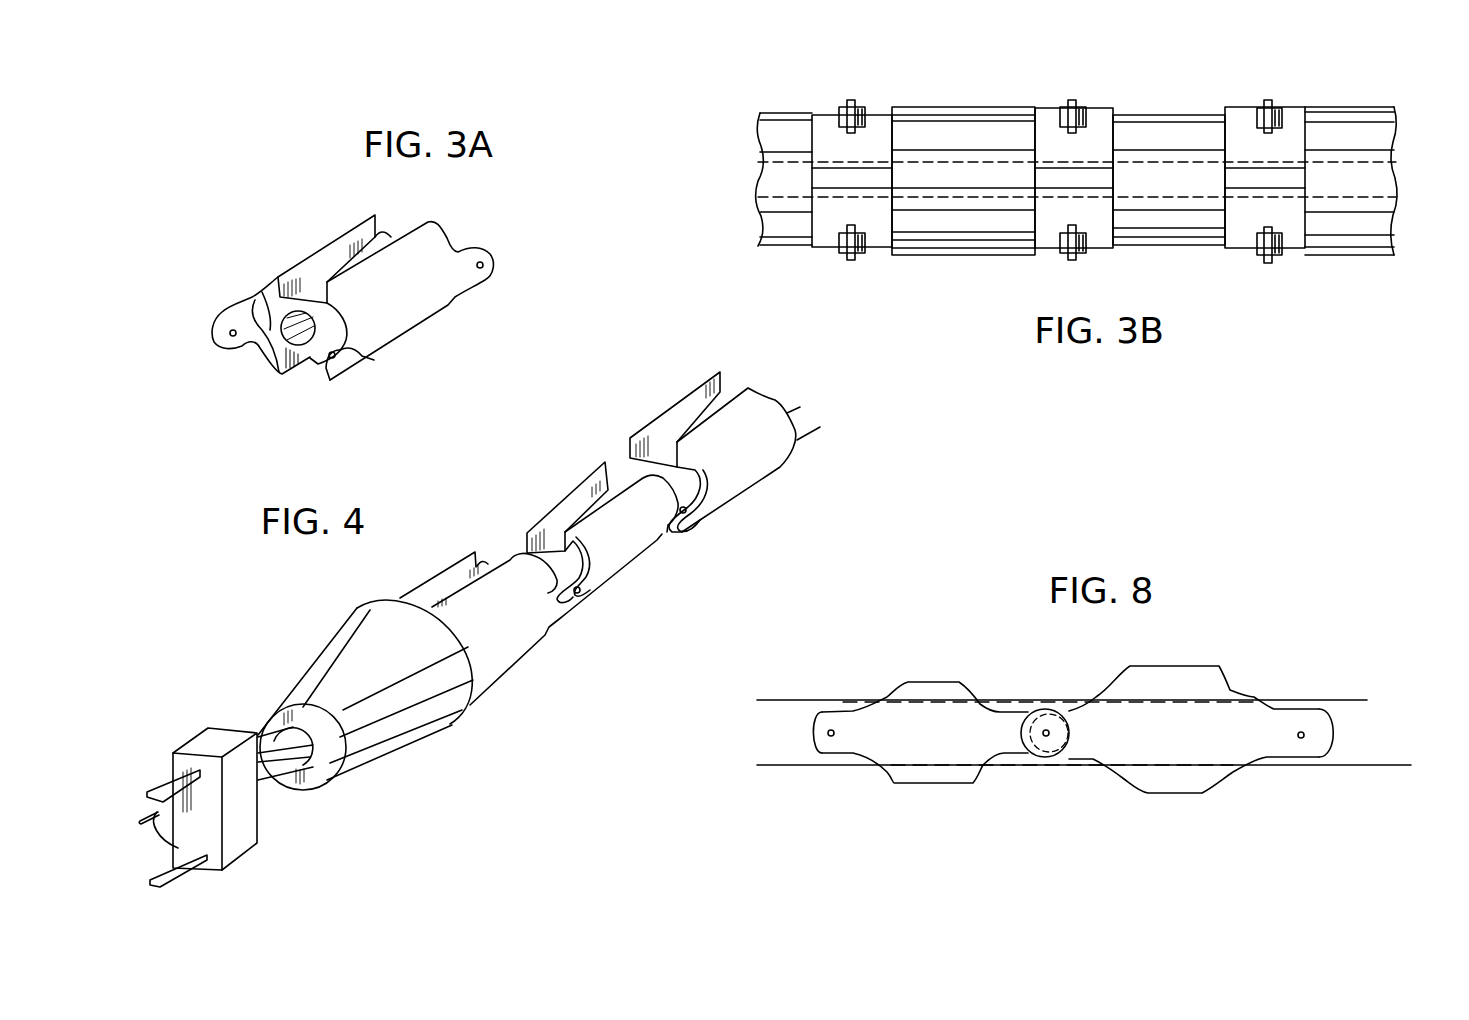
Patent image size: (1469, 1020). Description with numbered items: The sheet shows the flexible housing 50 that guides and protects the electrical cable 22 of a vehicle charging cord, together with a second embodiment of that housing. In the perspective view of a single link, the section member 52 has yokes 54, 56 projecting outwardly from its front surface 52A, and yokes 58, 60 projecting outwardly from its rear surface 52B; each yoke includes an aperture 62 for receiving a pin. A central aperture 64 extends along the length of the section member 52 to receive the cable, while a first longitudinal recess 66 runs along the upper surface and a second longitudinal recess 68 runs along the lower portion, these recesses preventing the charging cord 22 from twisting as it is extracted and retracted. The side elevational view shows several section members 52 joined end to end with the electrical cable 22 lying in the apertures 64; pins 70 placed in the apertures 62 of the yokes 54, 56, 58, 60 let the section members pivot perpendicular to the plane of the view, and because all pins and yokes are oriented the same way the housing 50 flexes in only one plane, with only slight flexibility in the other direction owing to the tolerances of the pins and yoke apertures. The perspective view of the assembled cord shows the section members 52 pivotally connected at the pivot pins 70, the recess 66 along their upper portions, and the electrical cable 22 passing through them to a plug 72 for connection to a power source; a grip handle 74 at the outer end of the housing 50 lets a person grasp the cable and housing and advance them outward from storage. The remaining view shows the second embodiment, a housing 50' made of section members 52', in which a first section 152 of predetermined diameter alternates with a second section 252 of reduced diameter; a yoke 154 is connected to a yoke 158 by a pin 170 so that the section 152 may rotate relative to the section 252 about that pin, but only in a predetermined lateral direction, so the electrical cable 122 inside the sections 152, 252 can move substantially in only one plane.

In FIG. 3B, the electrical cable 22 is at (987, 187).
In FIG. 4, the electrical cable 22 is at (307, 765).
In FIG. 3B, the housing 50 is at (1076, 154).
In FIG. 4, the housing 50 is at (751, 540).
In FIG. 3B, the section member 52 is at (1058, 166).
In FIG. 4, the section member 52 is at (626, 546).
In FIG. 3A, the front surface 52A is at (268, 293).
In FIG. 3A, the rear surface 52B is at (397, 235).
In FIG. 3A, the yoke 54 is at (328, 373).
In FIG. 3B, the yoke 54 is at (1281, 252).
In FIG. 3A, the yoke 56 is at (240, 350).
In FIG. 3B, the yoke 56 is at (1298, 108).
In FIG. 3A, the yoke 58 is at (480, 248).
In FIG. 3B, the yoke 58 is at (1242, 239).
In FIG. 3A, the yoke 60 is at (390, 233).
In FIG. 3B, the yoke 60 is at (1233, 119).
In FIG. 3A, the aperture 62 is at (362, 360).
In FIG. 3A, the central aperture 64 is at (315, 323).
In FIG. 3A, the first longitudinal recess 66 is at (313, 260).
In FIG. 4, the first longitudinal recess 66 is at (647, 435).
In FIG. 3A, the second longitudinal recess 68 is at (287, 360).
In FIG. 3B, the pin 70 is at (1267, 101).
In FIG. 4, the pin 70 is at (683, 513).
In FIG. 4, the plug 72 is at (250, 847).
In FIG. 4, the grip handle 74 is at (389, 742).
In FIG. 8, the electrical cable 122 is at (778, 711).
In FIG. 8, the first section 152 is at (1202, 781).
In FIG. 8, the yoke 154 is at (1077, 714).
In FIG. 8, the yoke 158 is at (995, 721).
In FIG. 8, the pin 170 is at (1046, 736).
In FIG. 8, the second section 252 is at (921, 776).
In FIG. 8, the housing 50' is at (1182, 633).
In FIG. 8, the section member 52' is at (1275, 673).